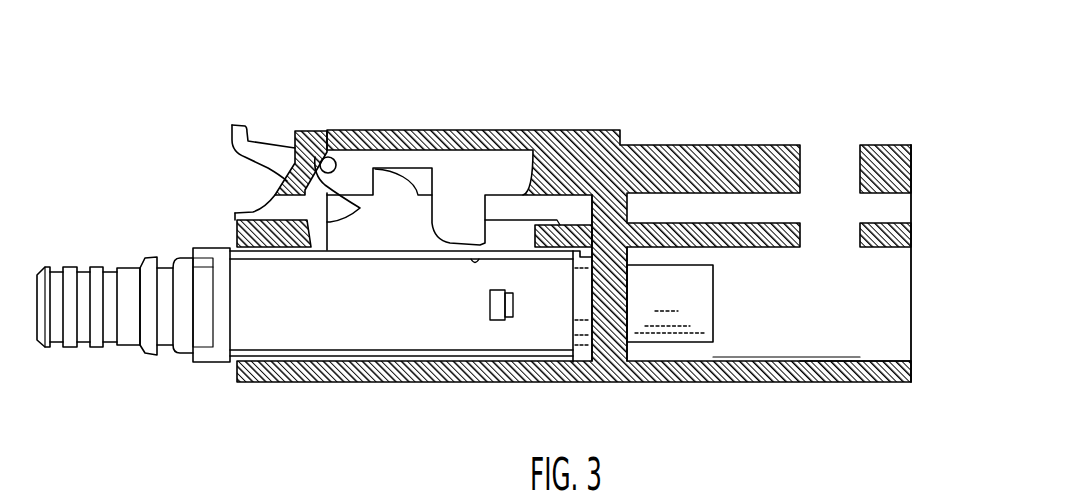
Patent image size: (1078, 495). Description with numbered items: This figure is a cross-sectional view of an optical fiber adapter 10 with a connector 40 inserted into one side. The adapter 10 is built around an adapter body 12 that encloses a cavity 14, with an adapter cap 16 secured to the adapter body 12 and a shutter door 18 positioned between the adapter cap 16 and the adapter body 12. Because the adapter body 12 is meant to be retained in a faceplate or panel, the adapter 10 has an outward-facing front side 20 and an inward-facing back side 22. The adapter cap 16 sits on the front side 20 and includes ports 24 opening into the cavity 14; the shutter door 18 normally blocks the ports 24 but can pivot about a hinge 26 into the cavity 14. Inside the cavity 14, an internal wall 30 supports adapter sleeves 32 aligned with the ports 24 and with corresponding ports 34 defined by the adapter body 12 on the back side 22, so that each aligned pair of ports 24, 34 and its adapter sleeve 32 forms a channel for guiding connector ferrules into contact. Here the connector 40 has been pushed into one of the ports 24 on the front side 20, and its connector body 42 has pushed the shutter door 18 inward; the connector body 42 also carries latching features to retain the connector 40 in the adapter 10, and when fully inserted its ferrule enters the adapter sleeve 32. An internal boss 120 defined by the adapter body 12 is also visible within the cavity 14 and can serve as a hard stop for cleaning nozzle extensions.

The adapter 10 is at (656, 44).
The adapter body 12 is at (698, 145).
The cavity 14 is at (746, 357).
The adapter cap 16 is at (313, 130).
The shutter door 18 is at (490, 157).
The front side 20 is at (237, 372).
The back side 22 is at (912, 370).
The ports 24 is at (257, 245).
The hinge 26 is at (333, 159).
The internal wall 30 is at (627, 383).
The adapter sleeves 32 is at (703, 292).
The ports 34 is at (904, 284).
The connector 40 is at (129, 345).
The connector body 42 is at (300, 340).
The internal boss 120 is at (533, 233).